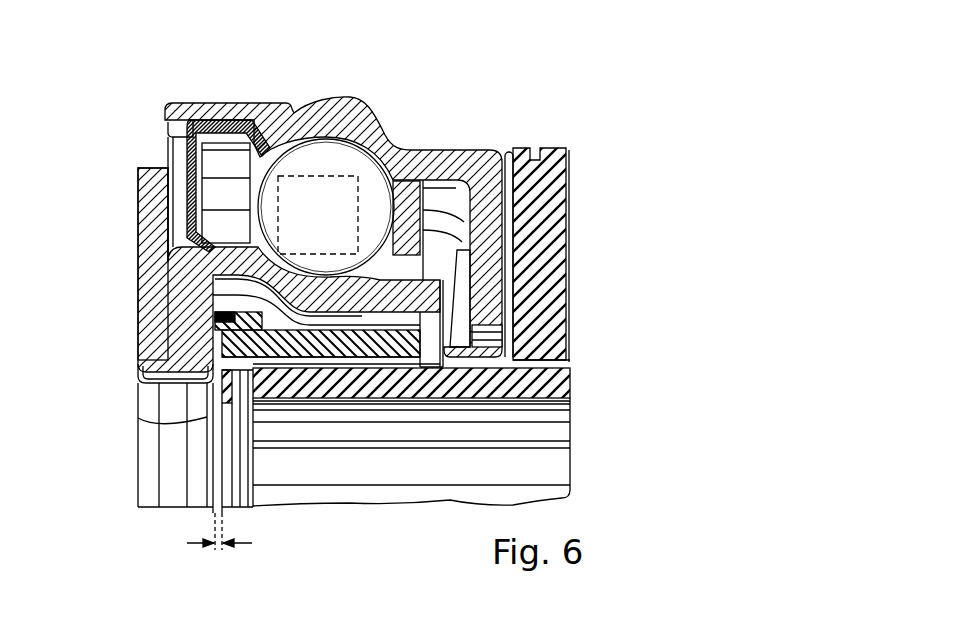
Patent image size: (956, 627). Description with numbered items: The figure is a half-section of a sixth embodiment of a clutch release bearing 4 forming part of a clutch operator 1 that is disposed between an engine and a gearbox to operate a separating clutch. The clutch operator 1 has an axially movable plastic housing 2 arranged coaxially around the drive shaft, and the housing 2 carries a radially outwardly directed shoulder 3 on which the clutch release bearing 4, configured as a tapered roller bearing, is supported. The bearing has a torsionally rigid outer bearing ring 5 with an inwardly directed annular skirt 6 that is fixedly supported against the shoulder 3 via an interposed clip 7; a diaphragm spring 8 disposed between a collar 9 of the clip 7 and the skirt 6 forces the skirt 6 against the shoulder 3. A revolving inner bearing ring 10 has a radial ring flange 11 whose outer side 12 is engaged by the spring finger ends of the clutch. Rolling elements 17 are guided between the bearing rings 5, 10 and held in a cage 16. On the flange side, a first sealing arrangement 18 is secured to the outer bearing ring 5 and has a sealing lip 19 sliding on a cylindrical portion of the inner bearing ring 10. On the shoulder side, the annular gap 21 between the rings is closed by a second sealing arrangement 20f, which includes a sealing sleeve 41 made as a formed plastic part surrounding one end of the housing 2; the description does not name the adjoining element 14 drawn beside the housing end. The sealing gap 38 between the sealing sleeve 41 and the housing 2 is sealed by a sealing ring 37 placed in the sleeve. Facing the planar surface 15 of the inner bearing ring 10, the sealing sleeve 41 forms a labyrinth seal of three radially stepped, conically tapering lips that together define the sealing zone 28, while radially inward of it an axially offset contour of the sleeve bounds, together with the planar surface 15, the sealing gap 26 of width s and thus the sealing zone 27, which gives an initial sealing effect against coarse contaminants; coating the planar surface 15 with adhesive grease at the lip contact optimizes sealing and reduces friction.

The clutch operator 1 is at (407, 104).
The housing 2 is at (550, 387).
The shoulder 3 is at (555, 212).
The clutch release bearing 4 is at (115, 84).
The outer bearing ring 5 is at (345, 118).
The annular skirt 6 is at (545, 240).
The clip 7 is at (560, 182).
The diaphragm spring 8 is at (468, 300).
The collar 9 is at (548, 362).
The inner bearing ring 10 is at (490, 333).
The ring flange 11 is at (138, 194).
The outer side 12 is at (138, 230).
The tube 14 is at (165, 392).
The planar surface 15 is at (215, 300).
The cage 16 is at (410, 182).
The rolling elements 17 is at (320, 150).
The first sealing arrangement 18 is at (213, 104).
The sealing lip 19 is at (205, 236).
The second sealing arrangement 20f is at (287, 403).
The annular gap 21 is at (474, 272).
The sealing gap 26 is at (207, 447).
The sealing zone 27 is at (160, 370).
The sealing zone 28 is at (218, 334).
The sealing ring 37 is at (312, 403).
The sealing gap 38 is at (345, 403).
The sealing sleeve 41 is at (392, 368).
The width s is at (217, 531).